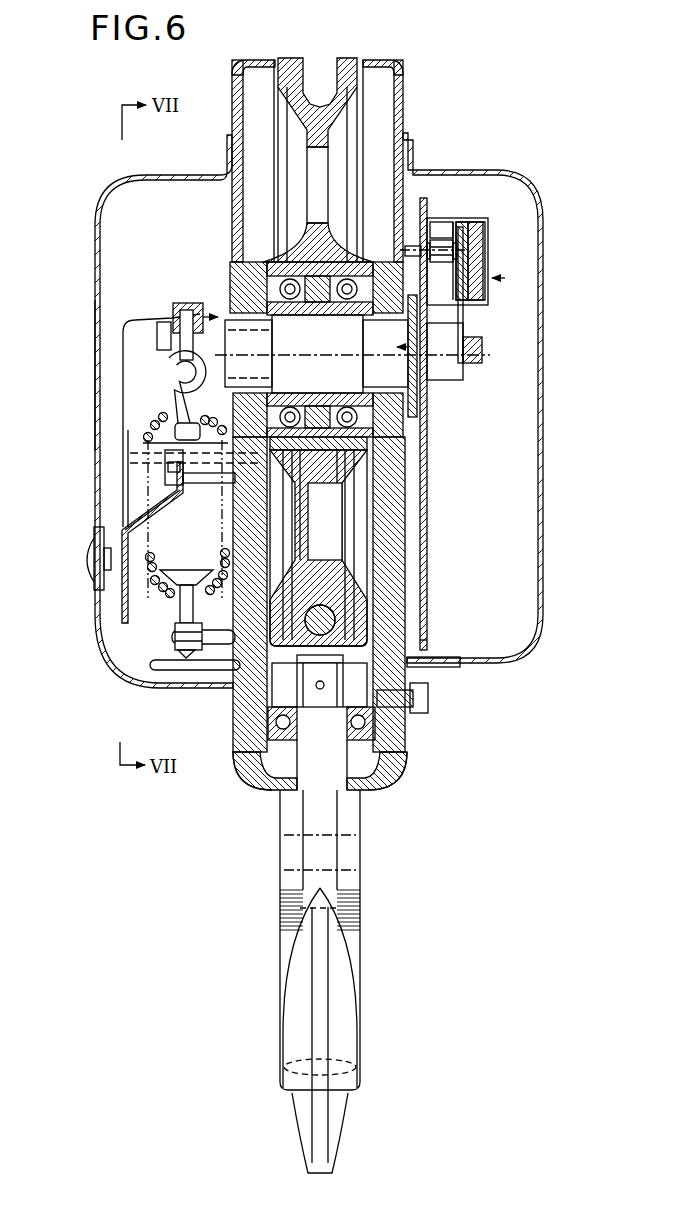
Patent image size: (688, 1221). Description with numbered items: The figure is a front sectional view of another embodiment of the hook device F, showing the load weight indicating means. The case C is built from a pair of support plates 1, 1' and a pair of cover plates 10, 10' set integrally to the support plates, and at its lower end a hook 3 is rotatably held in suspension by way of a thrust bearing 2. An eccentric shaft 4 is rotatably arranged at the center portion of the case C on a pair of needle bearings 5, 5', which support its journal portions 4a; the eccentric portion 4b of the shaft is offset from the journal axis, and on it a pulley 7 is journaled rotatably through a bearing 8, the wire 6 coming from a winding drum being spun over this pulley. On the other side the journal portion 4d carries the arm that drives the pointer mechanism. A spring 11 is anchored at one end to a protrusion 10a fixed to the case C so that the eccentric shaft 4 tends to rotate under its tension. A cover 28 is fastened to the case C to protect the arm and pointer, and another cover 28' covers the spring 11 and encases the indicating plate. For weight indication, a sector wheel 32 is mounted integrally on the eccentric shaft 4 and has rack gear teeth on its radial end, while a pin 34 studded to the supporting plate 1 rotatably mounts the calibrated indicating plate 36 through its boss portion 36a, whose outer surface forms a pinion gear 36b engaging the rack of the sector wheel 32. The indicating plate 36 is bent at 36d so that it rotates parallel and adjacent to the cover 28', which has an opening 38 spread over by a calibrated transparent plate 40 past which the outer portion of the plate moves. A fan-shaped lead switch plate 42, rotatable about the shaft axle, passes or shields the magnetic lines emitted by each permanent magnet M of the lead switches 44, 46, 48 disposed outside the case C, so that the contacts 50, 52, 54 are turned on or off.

The support plate 1 is at (253, 616).
The support plate 1' is at (394, 615).
The thrust bearing 2 is at (370, 713).
The hook 3 is at (322, 1000).
The eccentric shaft 4 is at (455, 380).
The journal portion 4a is at (237, 345).
The eccentric portion 4b is at (175, 385).
The journal portion 4d is at (457, 350).
The needle bearing 5 is at (244, 424).
The needle bearing 5' is at (407, 418).
The wire 6 is at (320, 64).
The pulley 7 is at (430, 652).
The bearing 8 is at (235, 293).
The cover plate 10 is at (165, 451).
The cover plate 10' is at (331, 789).
The protrusion 10a is at (155, 664).
The spring 11 is at (180, 596).
The cover 28 is at (473, 397).
The cover 28' is at (75, 338).
The sector wheel 32 is at (195, 315).
The pin 34 is at (130, 458).
The calibrated indicating plate 36 is at (110, 608).
The boss portion 36a is at (175, 490).
The pinion gear 36b is at (147, 447).
The bend 36d is at (187, 480).
The opening 38 is at (100, 567).
The calibrated transparent plate 40 is at (97, 590).
The lead switch plate 42 is at (465, 316).
The lead switch 44 is at (505, 279).
The lead switch 46 is at (475, 261).
The lead switch 48 is at (441, 230).
The contact 50 is at (443, 238).
The contact 52 is at (455, 251).
The contact 54 is at (428, 251).
The permanent magnet M is at (487, 240).
The case C is at (365, 778).
The hook device F is at (444, 122).